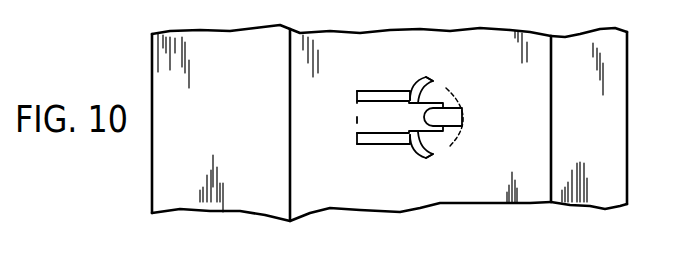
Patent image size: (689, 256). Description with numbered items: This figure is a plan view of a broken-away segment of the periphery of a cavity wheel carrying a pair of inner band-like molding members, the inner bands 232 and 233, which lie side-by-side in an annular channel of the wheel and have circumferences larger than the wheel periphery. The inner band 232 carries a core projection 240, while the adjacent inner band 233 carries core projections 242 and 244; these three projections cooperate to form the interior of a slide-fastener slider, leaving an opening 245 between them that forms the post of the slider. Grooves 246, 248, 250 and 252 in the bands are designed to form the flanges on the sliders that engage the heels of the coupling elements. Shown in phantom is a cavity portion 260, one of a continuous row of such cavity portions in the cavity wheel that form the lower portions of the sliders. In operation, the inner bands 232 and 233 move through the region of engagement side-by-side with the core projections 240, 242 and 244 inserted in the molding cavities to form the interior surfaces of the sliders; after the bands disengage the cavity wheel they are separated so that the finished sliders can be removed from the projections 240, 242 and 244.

The inner band 232 is at (305, 160).
The inner band 233 is at (543, 157).
The core projection 240 is at (417, 120).
The core projection 242 is at (423, 100).
The core projection 244 is at (432, 135).
The opening 245 is at (445, 117).
The groove 246 is at (380, 92).
The groove 248 is at (407, 142).
The groove 250 is at (418, 82).
The groove 252 is at (420, 157).
The cavity portion 260 is at (462, 103).